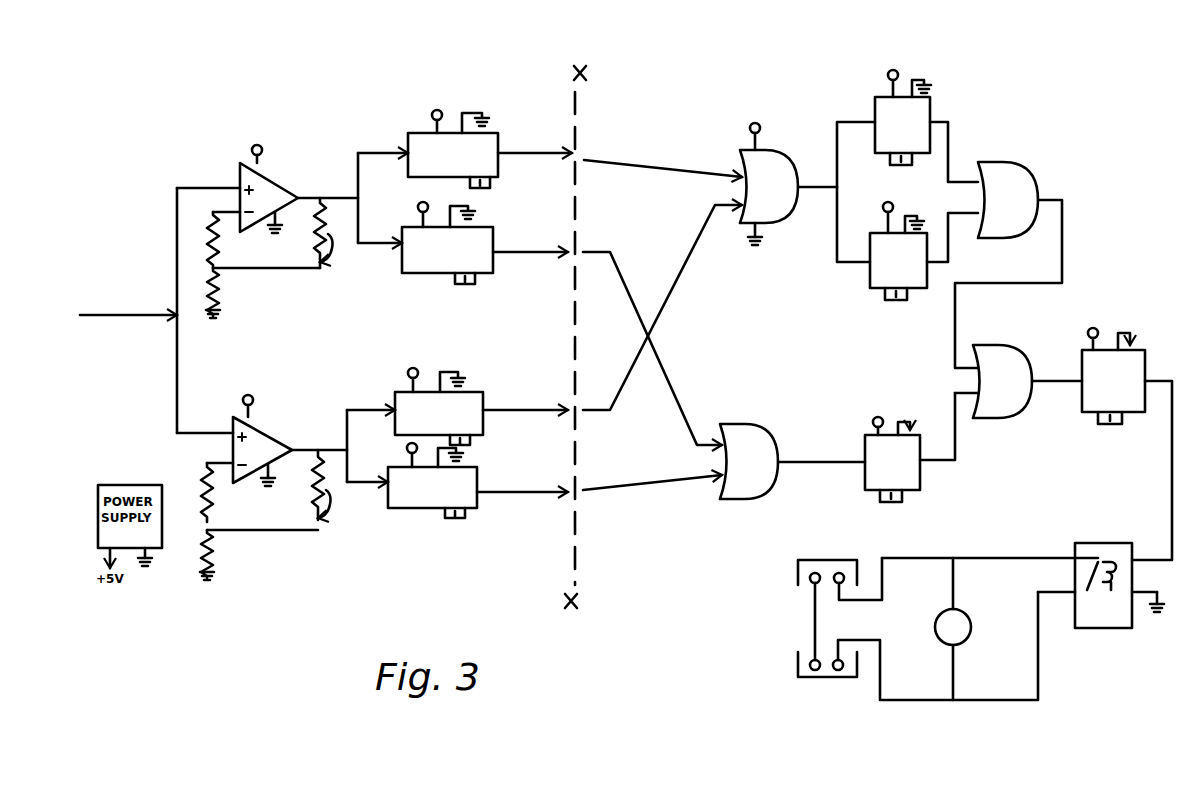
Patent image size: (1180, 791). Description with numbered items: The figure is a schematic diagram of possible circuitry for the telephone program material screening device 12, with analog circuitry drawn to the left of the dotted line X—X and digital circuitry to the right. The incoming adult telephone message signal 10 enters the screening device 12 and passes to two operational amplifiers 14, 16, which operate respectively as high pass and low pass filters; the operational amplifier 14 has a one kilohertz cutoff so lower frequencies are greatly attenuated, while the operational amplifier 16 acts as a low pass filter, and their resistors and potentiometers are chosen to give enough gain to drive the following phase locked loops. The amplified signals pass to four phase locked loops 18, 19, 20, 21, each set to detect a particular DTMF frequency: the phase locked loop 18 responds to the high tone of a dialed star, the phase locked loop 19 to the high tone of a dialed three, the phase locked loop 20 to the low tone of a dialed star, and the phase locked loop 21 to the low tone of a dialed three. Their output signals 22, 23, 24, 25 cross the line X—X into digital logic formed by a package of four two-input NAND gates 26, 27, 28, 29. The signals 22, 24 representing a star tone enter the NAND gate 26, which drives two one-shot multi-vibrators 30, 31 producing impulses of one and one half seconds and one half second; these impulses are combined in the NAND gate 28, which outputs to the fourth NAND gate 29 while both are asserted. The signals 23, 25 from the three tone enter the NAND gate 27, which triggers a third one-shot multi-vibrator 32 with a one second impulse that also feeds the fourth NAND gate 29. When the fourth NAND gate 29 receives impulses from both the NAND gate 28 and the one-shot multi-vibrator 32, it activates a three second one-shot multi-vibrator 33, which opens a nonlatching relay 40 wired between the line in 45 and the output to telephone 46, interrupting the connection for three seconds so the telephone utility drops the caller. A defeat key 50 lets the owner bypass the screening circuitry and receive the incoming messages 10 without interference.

The incoming telephone message signal 10 is at (131, 314).
The screening device 12 is at (230, 80).
The operational amplifier 14 is at (276, 210).
The operational amplifier 16 is at (269, 461).
The phase locked loop 18 is at (460, 176).
The phase locked loop 19 is at (455, 270).
The phase locked loop 20 is at (445, 434).
The phase locked loop 21 is at (440, 508).
The signal 22 is at (538, 158).
The signal 23 is at (538, 254).
The signal 24 is at (525, 412).
The signal 25 is at (523, 489).
The NAND gate 26 is at (774, 196).
The NAND gate 27 is at (752, 471).
The NAND gate 28 is at (1009, 210).
The fourth NAND gate 29 is at (1004, 391).
The one-shot multi-vibrator 30 is at (906, 144).
The one-shot multi-vibrator 31 is at (901, 282).
The third one-shot multi-vibrator 32 is at (894, 484).
The 3-second one-shot multi-vibrator 33 is at (1117, 401).
The nonlatching relay 40 is at (1103, 619).
The telephone line input 45 is at (840, 592).
The output to telephone 46 is at (905, 673).
The defeat key 50 is at (961, 636).